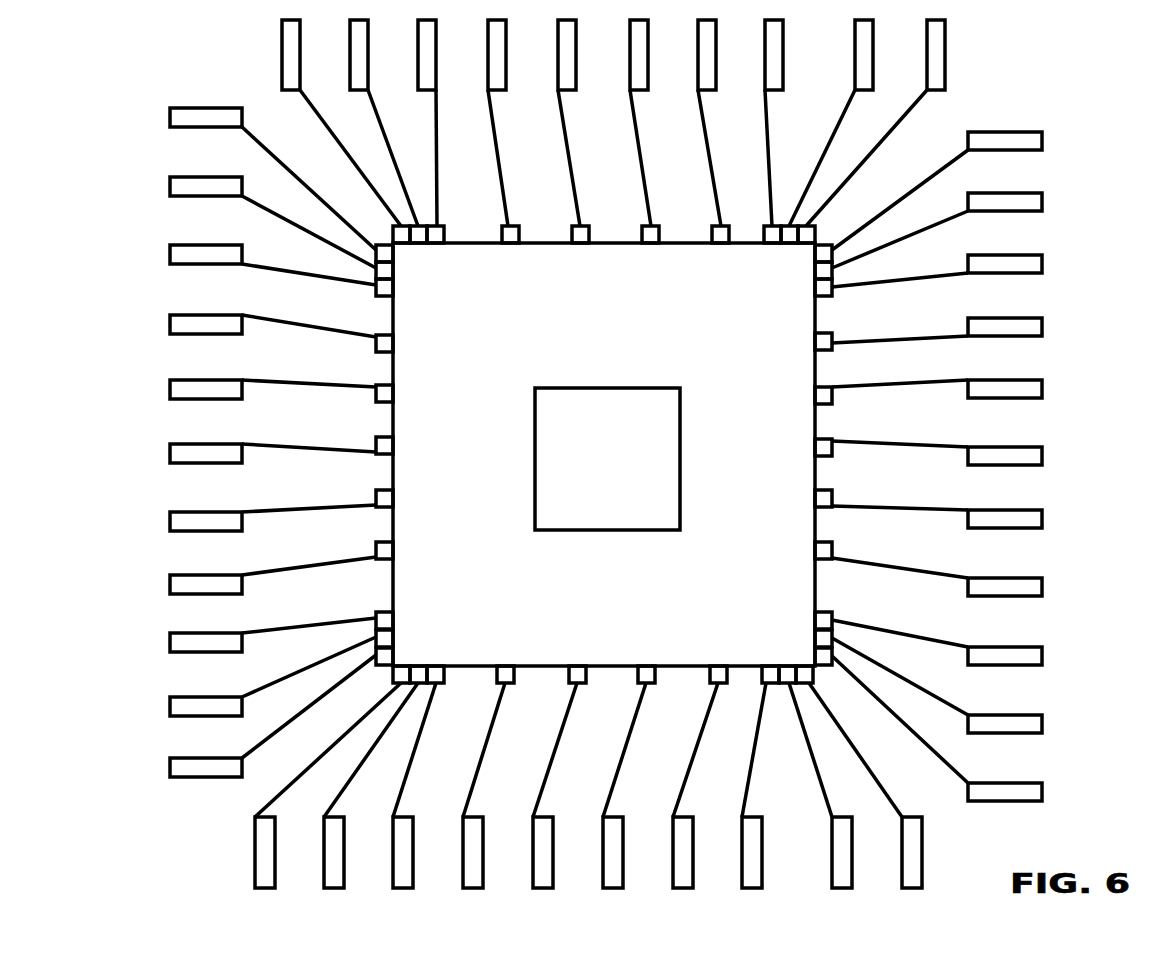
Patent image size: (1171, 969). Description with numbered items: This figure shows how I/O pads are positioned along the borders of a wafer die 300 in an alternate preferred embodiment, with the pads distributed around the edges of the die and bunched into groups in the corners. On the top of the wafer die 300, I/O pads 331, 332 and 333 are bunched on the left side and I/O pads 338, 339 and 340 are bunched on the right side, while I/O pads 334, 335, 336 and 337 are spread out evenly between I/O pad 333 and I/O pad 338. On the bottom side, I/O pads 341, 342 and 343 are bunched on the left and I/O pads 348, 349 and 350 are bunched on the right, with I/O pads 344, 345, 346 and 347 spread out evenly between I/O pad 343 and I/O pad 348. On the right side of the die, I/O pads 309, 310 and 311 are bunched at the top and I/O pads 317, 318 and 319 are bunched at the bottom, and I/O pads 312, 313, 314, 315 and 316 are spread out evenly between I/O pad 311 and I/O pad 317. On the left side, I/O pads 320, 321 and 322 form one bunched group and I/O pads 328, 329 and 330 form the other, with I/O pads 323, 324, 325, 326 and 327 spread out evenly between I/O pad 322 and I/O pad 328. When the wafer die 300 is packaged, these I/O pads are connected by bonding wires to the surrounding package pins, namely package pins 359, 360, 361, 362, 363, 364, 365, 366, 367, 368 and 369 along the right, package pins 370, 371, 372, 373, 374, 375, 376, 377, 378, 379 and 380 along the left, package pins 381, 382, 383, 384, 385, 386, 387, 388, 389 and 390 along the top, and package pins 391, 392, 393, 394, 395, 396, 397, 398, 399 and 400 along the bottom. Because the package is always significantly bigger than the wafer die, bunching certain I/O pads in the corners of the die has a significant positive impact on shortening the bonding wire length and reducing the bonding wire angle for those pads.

The wafer die 300 is at (630, 374).
The I/O pad 309 is at (815, 253).
The I/O pad 310 is at (815, 270).
The I/O pad 311 is at (815, 288).
The I/O pad 312 is at (815, 341).
The I/O pad 313 is at (815, 395).
The I/O pad 314 is at (815, 447).
The I/O pad 315 is at (815, 498).
The I/O pad 316 is at (815, 550).
The I/O pad 317 is at (815, 620).
The I/O pad 318 is at (815, 638).
The I/O pad 319 is at (815, 656).
The I/O pad 320 is at (395, 253).
The I/O pad 321 is at (395, 270).
The I/O pad 322 is at (395, 288).
The I/O pad 323 is at (395, 343).
The I/O pad 324 is at (395, 393).
The I/O pad 325 is at (395, 446).
The I/O pad 326 is at (395, 498).
The I/O pad 327 is at (395, 550).
The I/O pad 328 is at (395, 620).
The I/O pad 329 is at (395, 638).
The I/O pad 330 is at (395, 656).
The I/O pad 331 is at (396, 232).
The I/O pad 332 is at (420, 245).
The I/O pad 333 is at (440, 226).
The I/O pad 334 is at (512, 245).
The I/O pad 335 is at (580, 245).
The I/O pad 336 is at (650, 245).
The I/O pad 337 is at (715, 245).
The I/O pad 338 is at (770, 226).
The I/O pad 339 is at (789, 245).
The I/O pad 340 is at (810, 226).
The I/O pad 341 is at (403, 665).
The I/O pad 342 is at (420, 665).
The I/O pad 343 is at (437, 665).
The I/O pad 344 is at (505, 665).
The I/O pad 345 is at (580, 665).
The I/O pad 346 is at (648, 665).
The I/O pad 347 is at (712, 665).
The I/O pad 348 is at (768, 665).
The I/O pad 349 is at (798, 665).
The I/O pad 350 is at (810, 665).
The package pin 359 is at (1036, 132).
The package pin 360 is at (1036, 193).
The package pin 361 is at (1036, 255).
The package pin 362 is at (1036, 318).
The package pin 363 is at (1036, 380).
The package pin 364 is at (1036, 447).
The package pin 365 is at (1036, 510).
The package pin 366 is at (1036, 578).
The package pin 367 is at (1036, 647).
The package pin 368 is at (1036, 715).
The package pin 369 is at (1036, 783).
The package pin 370 is at (205, 108).
The package pin 371 is at (205, 177).
The package pin 372 is at (205, 245).
The package pin 373 is at (205, 315).
The package pin 374 is at (205, 380).
The package pin 375 is at (205, 444).
The package pin 376 is at (205, 512).
The package pin 377 is at (205, 575).
The package pin 378 is at (205, 633).
The package pin 379 is at (205, 697).
The package pin 380 is at (205, 758).
The package pin 381 is at (300, 72).
The package pin 382 is at (368, 72).
The package pin 383 is at (436, 72).
The package pin 384 is at (506, 72).
The package pin 385 is at (576, 72).
The package pin 386 is at (648, 72).
The package pin 387 is at (716, 72).
The package pin 388 is at (783, 72).
The package pin 389 is at (873, 72).
The package pin 390 is at (945, 72).
The package pin 391 is at (297, 865).
The package pin 392 is at (366, 865).
The package pin 393 is at (435, 865).
The package pin 394 is at (505, 865).
The package pin 395 is at (575, 865).
The package pin 396 is at (645, 865).
The package pin 397 is at (715, 865).
The package pin 398 is at (784, 865).
The package pin 399 is at (874, 865).
The package pin 400 is at (944, 865).